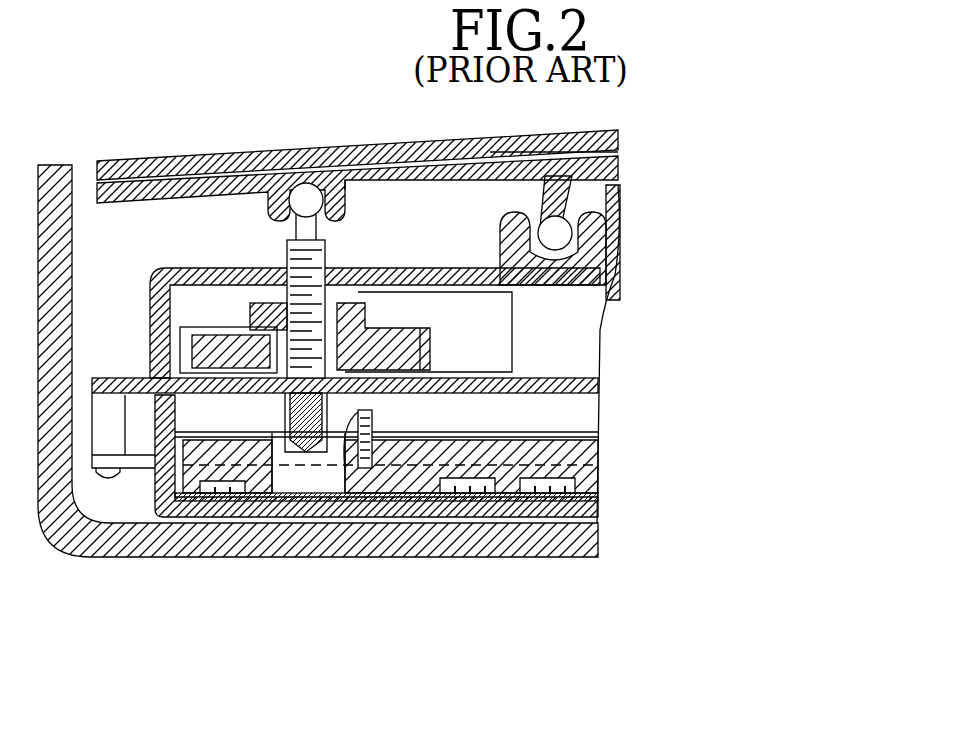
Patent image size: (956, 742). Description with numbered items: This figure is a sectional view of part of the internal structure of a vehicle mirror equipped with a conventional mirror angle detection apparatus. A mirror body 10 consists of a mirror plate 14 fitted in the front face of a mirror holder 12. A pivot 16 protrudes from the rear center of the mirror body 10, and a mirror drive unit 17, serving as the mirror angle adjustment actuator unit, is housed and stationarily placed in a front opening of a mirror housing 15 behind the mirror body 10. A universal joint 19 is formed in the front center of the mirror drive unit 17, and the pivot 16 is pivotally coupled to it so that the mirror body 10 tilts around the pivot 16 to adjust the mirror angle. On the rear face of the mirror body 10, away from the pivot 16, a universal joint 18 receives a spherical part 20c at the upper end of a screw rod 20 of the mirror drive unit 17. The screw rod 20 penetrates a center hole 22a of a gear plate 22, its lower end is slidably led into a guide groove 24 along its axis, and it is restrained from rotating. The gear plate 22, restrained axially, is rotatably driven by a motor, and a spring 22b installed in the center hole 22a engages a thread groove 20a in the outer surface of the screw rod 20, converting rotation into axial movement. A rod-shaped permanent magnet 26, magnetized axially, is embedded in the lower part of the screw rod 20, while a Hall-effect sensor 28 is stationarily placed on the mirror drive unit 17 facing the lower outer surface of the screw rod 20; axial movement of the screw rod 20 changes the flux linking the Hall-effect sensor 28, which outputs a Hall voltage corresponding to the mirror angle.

The mirror body 10 is at (357, 133).
The mirror holder 12 is at (232, 168).
The mirror plate 14 is at (246, 178).
The mirror housing 15 is at (572, 560).
The pivot 16 is at (587, 238).
The mirror drive unit 17 is at (556, 324).
The universal joint 18 is at (346, 205).
The universal joint 19 is at (598, 245).
The screw rod 20 is at (301, 275).
The thread groove 20a is at (322, 262).
The spherical part 20c is at (308, 195).
The gear plate 22 is at (400, 332).
The center hole 22a is at (290, 312).
The spring 22b is at (275, 352).
The guide groove 24 is at (258, 500).
The permanent magnet 26 is at (315, 501).
The Hall-effect sensor 28 is at (348, 480).